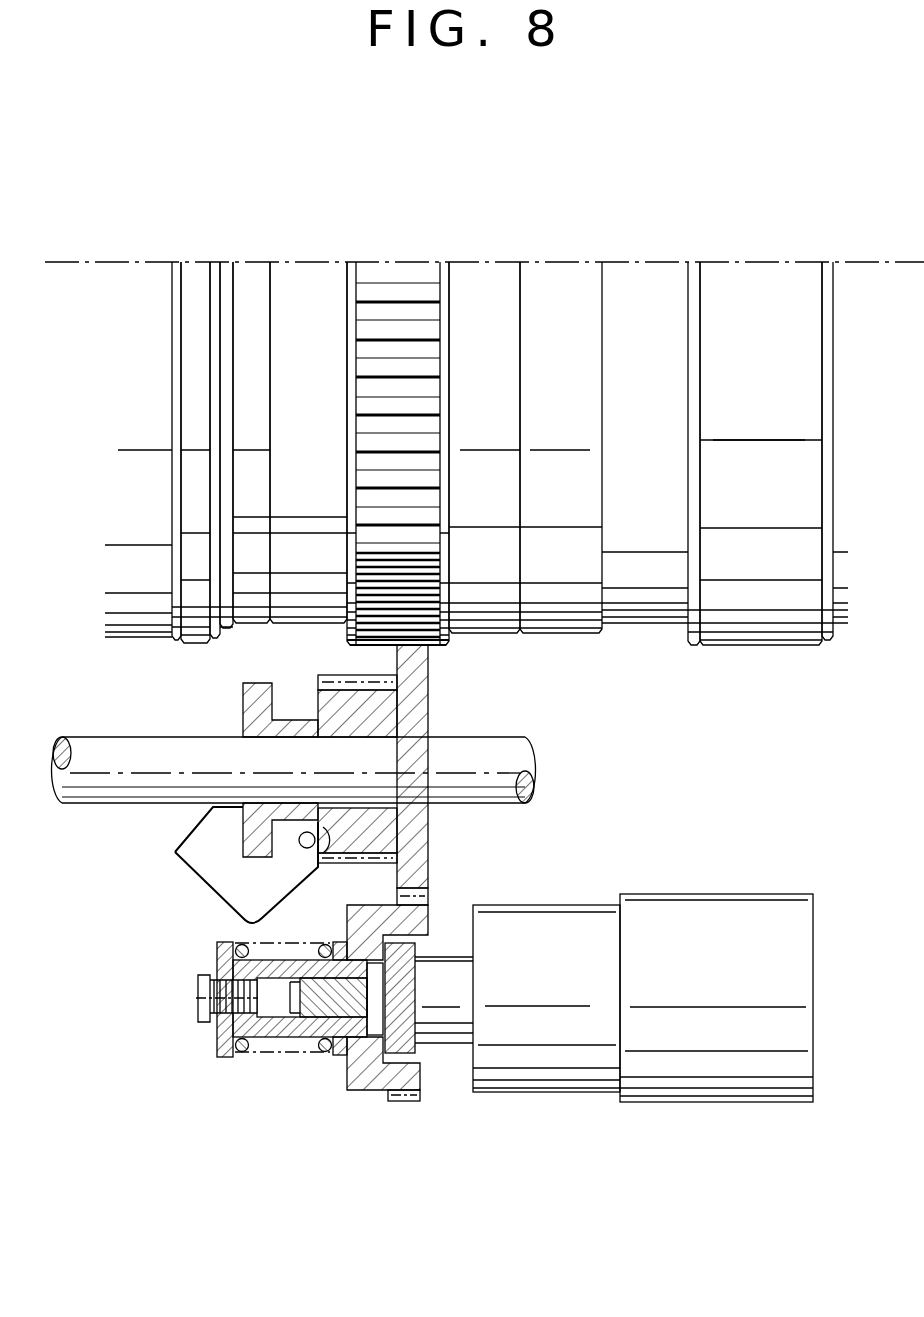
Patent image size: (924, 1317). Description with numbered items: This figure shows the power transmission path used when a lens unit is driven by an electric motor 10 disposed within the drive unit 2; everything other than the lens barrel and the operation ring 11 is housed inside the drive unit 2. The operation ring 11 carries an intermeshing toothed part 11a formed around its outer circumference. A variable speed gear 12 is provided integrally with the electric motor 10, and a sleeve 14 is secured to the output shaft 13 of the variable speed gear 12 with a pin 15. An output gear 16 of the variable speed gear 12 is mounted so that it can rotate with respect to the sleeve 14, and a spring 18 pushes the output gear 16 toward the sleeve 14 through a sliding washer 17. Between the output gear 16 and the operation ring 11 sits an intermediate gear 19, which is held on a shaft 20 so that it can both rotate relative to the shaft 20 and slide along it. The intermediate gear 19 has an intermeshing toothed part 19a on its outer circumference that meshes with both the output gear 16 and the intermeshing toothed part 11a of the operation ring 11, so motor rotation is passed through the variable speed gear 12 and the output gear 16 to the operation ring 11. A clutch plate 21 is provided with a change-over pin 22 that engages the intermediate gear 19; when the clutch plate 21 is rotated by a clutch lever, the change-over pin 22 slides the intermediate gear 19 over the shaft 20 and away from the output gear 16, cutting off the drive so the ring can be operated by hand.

The drive unit 2 is at (643, 975).
The electric motor 10 is at (737, 1075).
The operation ring 11 is at (309, 303).
The intermeshing toothed part 11a is at (392, 632).
The variable speed gear 12 is at (563, 1068).
The output shaft 13 is at (312, 1008).
The sleeve 14 is at (415, 1050).
The pin 15 is at (380, 1005).
The output gear 16 is at (413, 925).
The sliding washer 17 is at (343, 1057).
The spring 18 is at (263, 1045).
The intermediate gear 19 is at (413, 710).
The intermeshing toothed part 19a is at (428, 665).
The shaft 20 is at (503, 763).
The clutch plate 21 is at (208, 832).
The change-over pin 22 is at (300, 848).